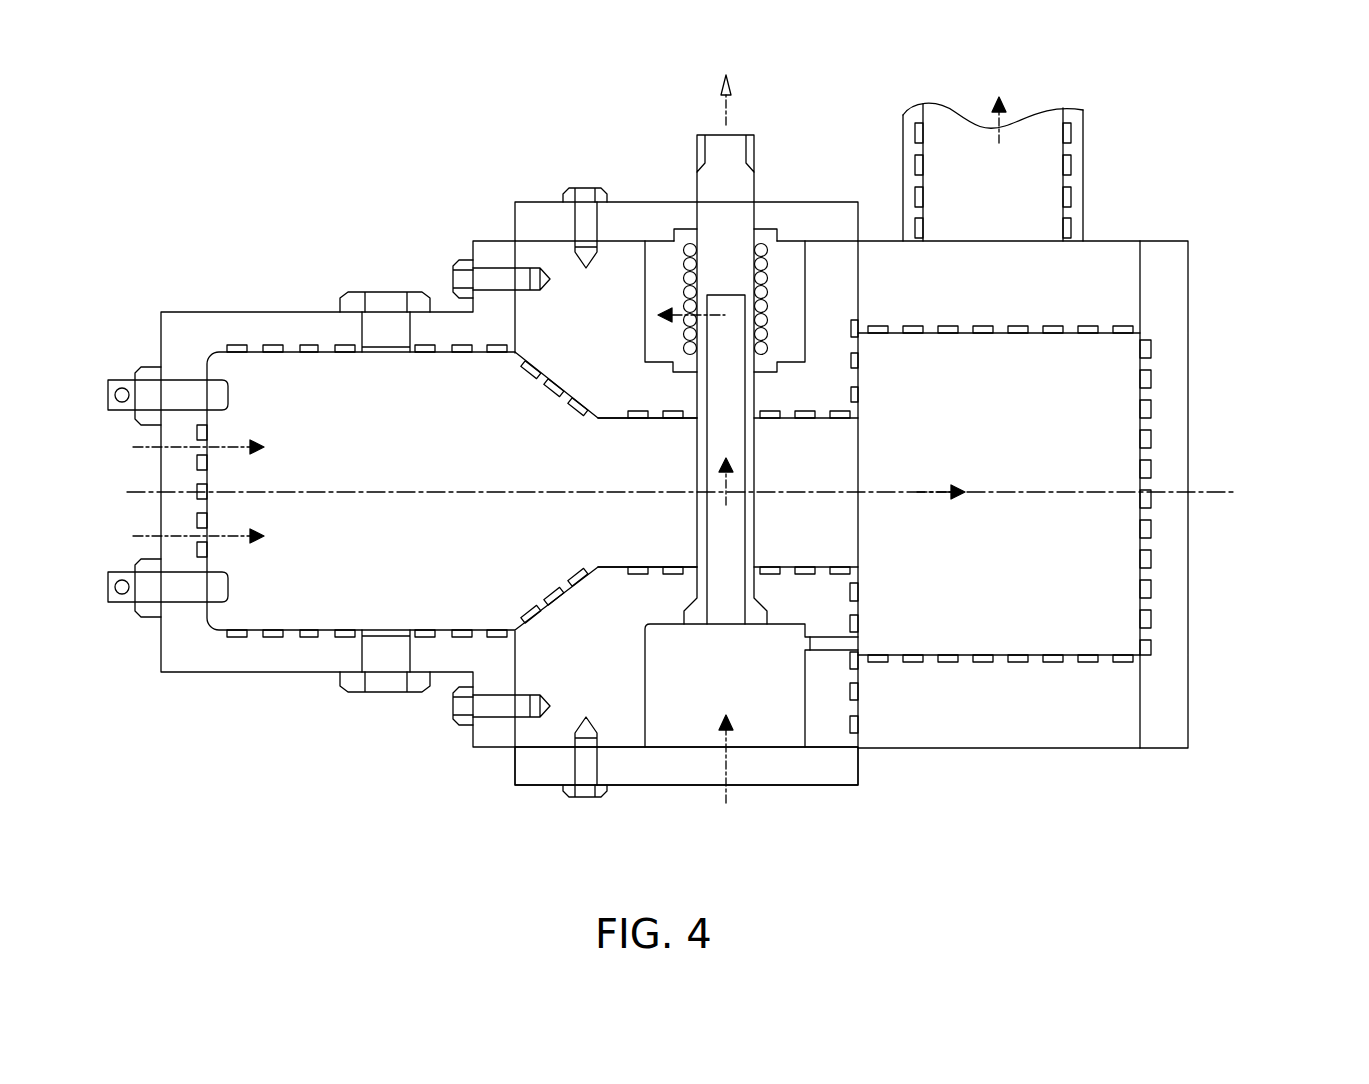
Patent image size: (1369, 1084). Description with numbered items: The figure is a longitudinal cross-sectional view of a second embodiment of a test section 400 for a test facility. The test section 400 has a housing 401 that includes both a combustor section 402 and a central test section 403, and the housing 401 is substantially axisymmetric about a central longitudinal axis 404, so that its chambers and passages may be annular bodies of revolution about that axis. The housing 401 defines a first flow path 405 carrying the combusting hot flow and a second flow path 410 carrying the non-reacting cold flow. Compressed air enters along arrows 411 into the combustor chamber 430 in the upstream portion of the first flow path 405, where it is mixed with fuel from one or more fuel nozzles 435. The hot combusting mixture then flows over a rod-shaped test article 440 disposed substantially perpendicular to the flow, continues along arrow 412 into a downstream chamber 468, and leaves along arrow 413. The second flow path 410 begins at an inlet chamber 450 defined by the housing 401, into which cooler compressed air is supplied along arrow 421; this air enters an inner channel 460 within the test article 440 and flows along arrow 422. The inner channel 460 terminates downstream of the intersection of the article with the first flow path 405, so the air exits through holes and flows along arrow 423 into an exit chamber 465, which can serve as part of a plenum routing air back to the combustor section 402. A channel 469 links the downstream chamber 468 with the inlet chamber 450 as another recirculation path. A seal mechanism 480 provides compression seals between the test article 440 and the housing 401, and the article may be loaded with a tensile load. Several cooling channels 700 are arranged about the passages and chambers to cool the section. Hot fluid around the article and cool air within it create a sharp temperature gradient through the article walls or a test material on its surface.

The test section 400 is at (1233, 691).
The housing 401 is at (1060, 527).
The combustor section 402 is at (205, 675).
The central test section 403 is at (858, 748).
The central longitudinal axis 404 is at (1218, 497).
The first flow path 405 is at (1038, 130).
The second flow path 410 is at (686, 490).
The arrows 411 is at (135, 447).
The arrow 412 is at (917, 490).
The arrow 413 is at (990, 100).
The arrow 421 is at (726, 803).
The arrow 422 is at (727, 497).
The arrow 423 is at (656, 313).
The combustor chamber 430 is at (288, 372).
The fuel nozzles 435 is at (135, 372).
The test article 440 is at (753, 178).
The inlet chamber 450 is at (790, 730).
The inner channel 460 is at (735, 425).
The exit chamber 465 is at (660, 270).
The downstream chamber 468 is at (1122, 631).
The channel 469 is at (840, 643).
The seal mechanism 480 is at (688, 229).
The cooling channels 700 is at (425, 345).